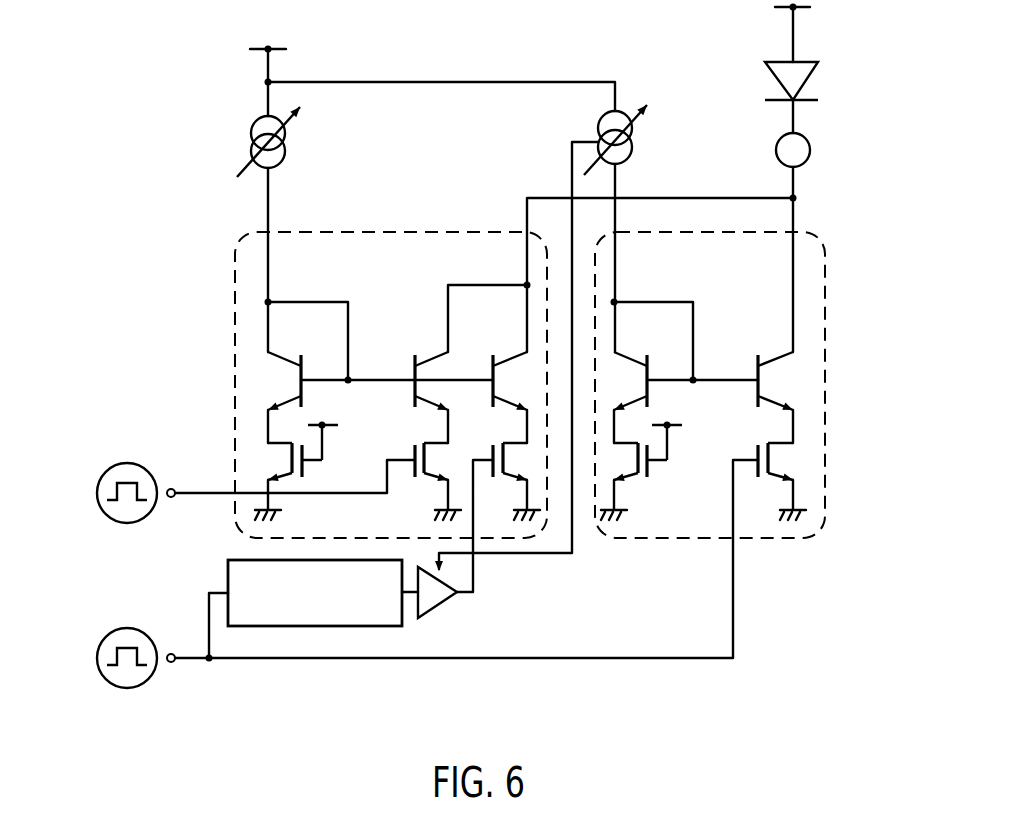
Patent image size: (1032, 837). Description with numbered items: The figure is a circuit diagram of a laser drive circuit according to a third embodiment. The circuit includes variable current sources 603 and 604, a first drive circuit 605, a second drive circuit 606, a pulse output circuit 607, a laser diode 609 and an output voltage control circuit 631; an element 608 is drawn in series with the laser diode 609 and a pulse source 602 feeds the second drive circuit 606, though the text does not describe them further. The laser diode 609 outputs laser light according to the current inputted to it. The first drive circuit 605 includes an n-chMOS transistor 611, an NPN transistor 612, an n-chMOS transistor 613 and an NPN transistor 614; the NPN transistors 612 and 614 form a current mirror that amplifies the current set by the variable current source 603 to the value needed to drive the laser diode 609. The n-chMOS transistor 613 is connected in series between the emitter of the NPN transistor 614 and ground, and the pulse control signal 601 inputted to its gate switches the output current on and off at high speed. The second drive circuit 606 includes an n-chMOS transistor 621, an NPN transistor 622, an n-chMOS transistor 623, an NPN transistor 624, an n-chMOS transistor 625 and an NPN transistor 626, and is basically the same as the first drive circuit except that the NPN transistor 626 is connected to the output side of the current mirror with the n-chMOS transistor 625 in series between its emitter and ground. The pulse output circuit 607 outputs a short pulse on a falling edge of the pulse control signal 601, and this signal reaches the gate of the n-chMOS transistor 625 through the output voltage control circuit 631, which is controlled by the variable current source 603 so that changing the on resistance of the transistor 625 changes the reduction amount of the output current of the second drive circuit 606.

The pulse control signal 601 is at (97, 658).
The second pulse signal source 602 is at (97, 493).
The variable current source 603 is at (598, 119).
The variable current source 604 is at (251, 137).
The first drive circuit 605 is at (828, 322).
The second drive circuit 606 is at (233, 295).
The pulse output circuit 607 is at (228, 577).
The semiconductor laser 608 is at (812, 150).
The laser diode 609 is at (812, 85).
The n-chMOS transistor 611 is at (637, 480).
The NPN transistor 612 is at (632, 347).
The n-chMOS transistor 613 is at (783, 462).
The NPN transistor 614 is at (783, 382).
The n-chMOS transistor 621 is at (270, 460).
The NPN transistor 622 is at (270, 380).
The n-chMOS transistor 623 is at (447, 462).
The NPN transistor 624 is at (427, 348).
The n-chMOS transistor 625 is at (527, 462).
The NPN transistor 626 is at (508, 350).
The output voltage control circuit 631 is at (438, 603).